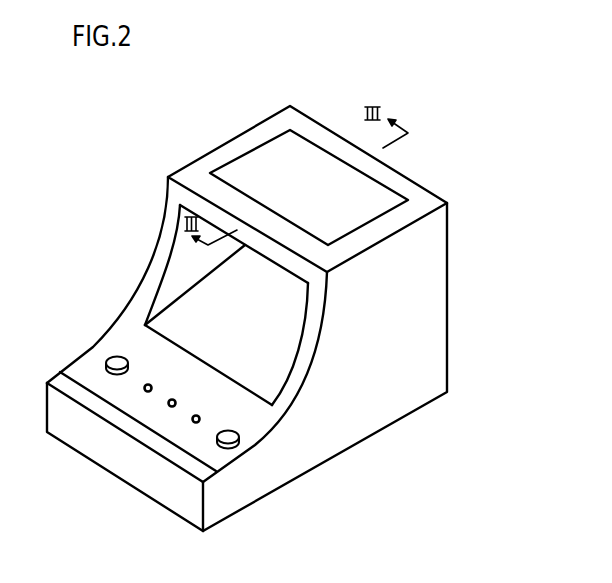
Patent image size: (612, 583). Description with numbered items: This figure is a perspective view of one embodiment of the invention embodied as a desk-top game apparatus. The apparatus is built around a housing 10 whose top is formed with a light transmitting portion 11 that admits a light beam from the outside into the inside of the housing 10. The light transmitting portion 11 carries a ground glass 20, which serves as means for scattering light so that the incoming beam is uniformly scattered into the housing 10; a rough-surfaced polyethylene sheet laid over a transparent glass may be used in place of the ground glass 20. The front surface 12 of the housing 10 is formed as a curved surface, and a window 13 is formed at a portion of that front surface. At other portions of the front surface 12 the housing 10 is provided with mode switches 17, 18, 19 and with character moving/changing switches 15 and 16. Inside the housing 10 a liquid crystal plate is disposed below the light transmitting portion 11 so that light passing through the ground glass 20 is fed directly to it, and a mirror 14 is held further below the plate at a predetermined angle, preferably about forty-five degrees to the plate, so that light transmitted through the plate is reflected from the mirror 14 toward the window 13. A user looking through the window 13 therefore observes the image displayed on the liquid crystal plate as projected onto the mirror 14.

The housing 10 is at (440, 253).
The light transmitting portion 11 is at (393, 172).
The front surface 12 is at (265, 418).
The window 13 is at (176, 283).
The mirror 14 is at (278, 357).
The character moving/changing switch 15 is at (112, 362).
The character moving/changing switch 16 is at (235, 446).
The mode switch 17 is at (146, 393).
The mode switch 18 is at (171, 408).
The mode switch 19 is at (195, 424).
The ground glass 20 is at (307, 158).